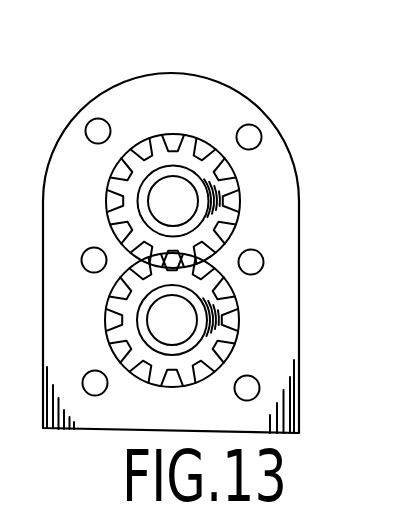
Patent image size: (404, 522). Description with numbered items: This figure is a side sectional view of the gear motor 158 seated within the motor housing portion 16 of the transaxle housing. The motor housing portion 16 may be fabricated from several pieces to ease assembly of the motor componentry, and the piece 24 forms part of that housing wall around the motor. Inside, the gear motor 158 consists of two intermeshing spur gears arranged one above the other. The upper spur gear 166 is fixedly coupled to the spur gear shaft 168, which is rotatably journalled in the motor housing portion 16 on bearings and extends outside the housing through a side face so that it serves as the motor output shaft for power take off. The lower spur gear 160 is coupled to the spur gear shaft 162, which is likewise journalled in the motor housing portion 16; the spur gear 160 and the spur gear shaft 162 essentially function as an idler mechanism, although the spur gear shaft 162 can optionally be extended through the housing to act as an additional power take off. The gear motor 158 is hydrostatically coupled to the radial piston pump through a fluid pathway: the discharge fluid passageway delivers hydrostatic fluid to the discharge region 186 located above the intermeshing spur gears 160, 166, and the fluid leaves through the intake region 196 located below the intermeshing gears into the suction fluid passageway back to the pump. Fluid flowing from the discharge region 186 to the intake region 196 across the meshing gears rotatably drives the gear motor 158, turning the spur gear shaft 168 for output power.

The motor housing portion 16 is at (274, 129).
The piece 24 is at (277, 211).
The gear motor 158 is at (201, 169).
The spur gear 166 is at (133, 200).
The spur gear shaft 168 is at (163, 193).
The discharge region 186 is at (220, 253).
The intake region 196 is at (118, 262).
The spur gear 160 is at (232, 337).
The spur gear shaft 162 is at (173, 325).